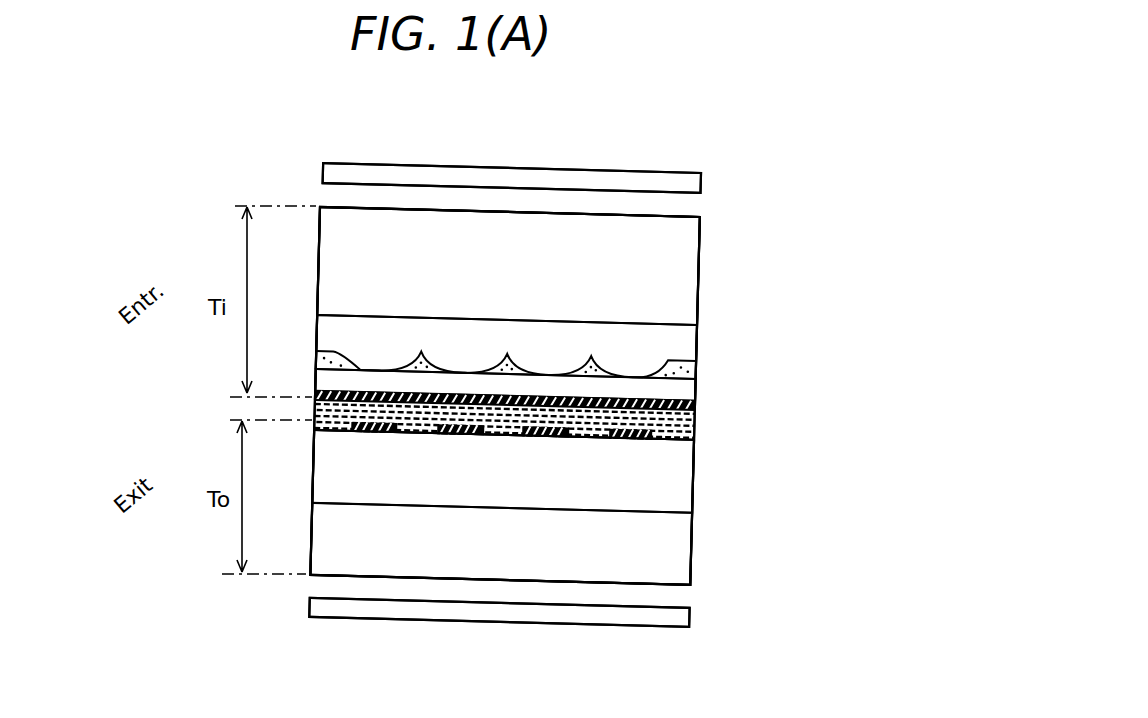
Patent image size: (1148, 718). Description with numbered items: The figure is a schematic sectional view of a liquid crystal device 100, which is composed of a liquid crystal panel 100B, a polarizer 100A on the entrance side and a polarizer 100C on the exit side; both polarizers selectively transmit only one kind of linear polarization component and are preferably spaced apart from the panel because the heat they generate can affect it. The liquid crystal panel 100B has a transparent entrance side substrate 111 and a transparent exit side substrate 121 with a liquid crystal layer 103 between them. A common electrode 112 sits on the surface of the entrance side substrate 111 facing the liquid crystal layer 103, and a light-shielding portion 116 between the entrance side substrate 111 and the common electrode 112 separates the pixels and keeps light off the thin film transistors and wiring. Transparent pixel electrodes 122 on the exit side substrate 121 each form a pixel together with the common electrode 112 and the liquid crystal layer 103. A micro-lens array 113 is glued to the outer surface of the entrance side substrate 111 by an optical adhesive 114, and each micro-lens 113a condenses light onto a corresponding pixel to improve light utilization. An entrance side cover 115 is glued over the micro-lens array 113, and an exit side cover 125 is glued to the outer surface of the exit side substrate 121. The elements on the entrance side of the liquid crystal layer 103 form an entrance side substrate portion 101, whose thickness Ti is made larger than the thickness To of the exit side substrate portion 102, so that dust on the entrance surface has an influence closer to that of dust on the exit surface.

The liquid crystal device 100 is at (579, 114).
The polarizer 100A is at (636, 165).
The liquid crystal panel 100B is at (898, 297).
The polarizer 100C is at (608, 627).
The entrance side substrate portion 101 is at (828, 218).
The exit side substrate portion 102 is at (822, 438).
The liquid crystal layer 103 is at (700, 430).
The entrance side substrate 111 is at (700, 385).
The common electrode 112 is at (700, 406).
The micro-lens array 113 is at (700, 338).
The micro-lens 113a is at (647, 343).
The optical adhesive 114 is at (700, 362).
The entrance side cover 115 is at (699, 243).
The light-shielding portion (BM) 116 is at (700, 397).
The exit side substrate 121 is at (700, 482).
The pixel electrode 122 is at (647, 438).
The exit side cover 125 is at (700, 547).